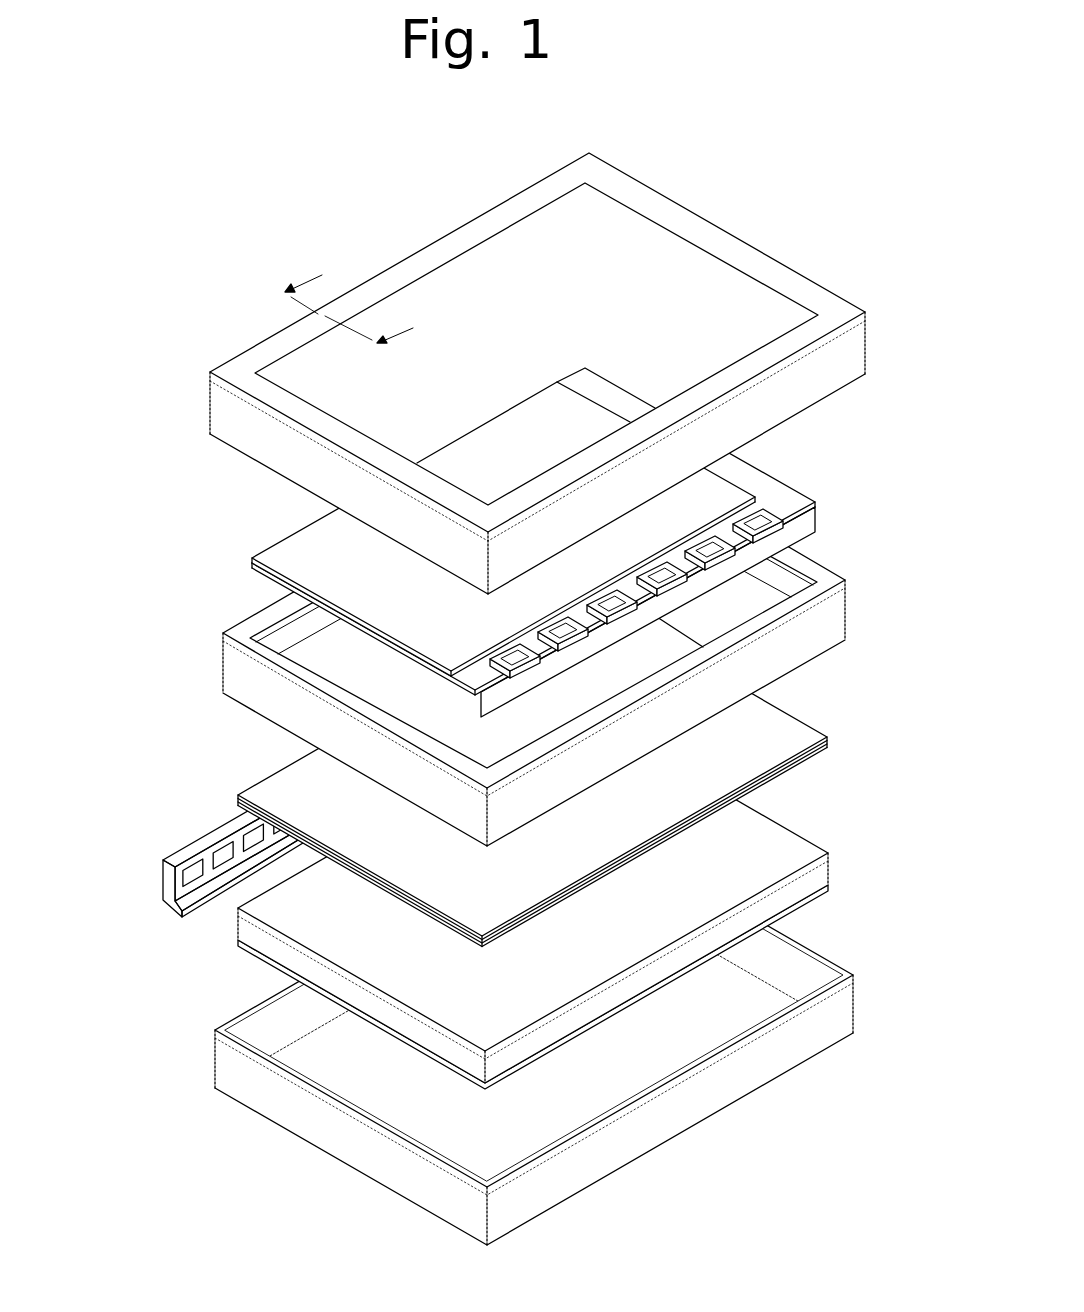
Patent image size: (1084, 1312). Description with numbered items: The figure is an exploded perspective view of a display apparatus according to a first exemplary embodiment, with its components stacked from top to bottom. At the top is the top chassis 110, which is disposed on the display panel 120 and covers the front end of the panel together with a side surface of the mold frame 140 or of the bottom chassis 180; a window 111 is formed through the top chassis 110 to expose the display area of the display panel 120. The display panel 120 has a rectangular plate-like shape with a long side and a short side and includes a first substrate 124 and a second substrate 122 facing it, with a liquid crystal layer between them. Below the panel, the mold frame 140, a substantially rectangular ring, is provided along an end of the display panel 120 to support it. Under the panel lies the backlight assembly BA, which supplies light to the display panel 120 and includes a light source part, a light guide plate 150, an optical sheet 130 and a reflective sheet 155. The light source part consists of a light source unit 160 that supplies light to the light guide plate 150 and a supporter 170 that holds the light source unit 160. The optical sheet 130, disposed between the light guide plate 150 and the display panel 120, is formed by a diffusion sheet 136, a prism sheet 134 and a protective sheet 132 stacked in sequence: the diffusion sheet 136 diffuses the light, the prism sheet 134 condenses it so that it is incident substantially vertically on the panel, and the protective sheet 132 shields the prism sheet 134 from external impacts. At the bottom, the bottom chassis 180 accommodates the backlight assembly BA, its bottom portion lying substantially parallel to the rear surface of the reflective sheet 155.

The top chassis 110 is at (527, 373).
The window 111 is at (506, 283).
The display panel 120 is at (582, 546).
The second substrate 122 is at (725, 492).
The first substrate 124 is at (771, 488).
The mold frame 140 is at (226, 671).
The optical sheet 130 is at (467, 771).
The protective sheet 132 is at (238, 795).
The prism sheet 134 is at (240, 799).
The diffusion sheet 136 is at (238, 805).
The supporter 170 is at (231, 838).
The light source unit 160 is at (165, 877).
The light guide plate 150 is at (245, 927).
The reflective sheet 155 is at (240, 943).
The bottom chassis 180 is at (206, 1056).
The backlight assembly BA is at (108, 776).